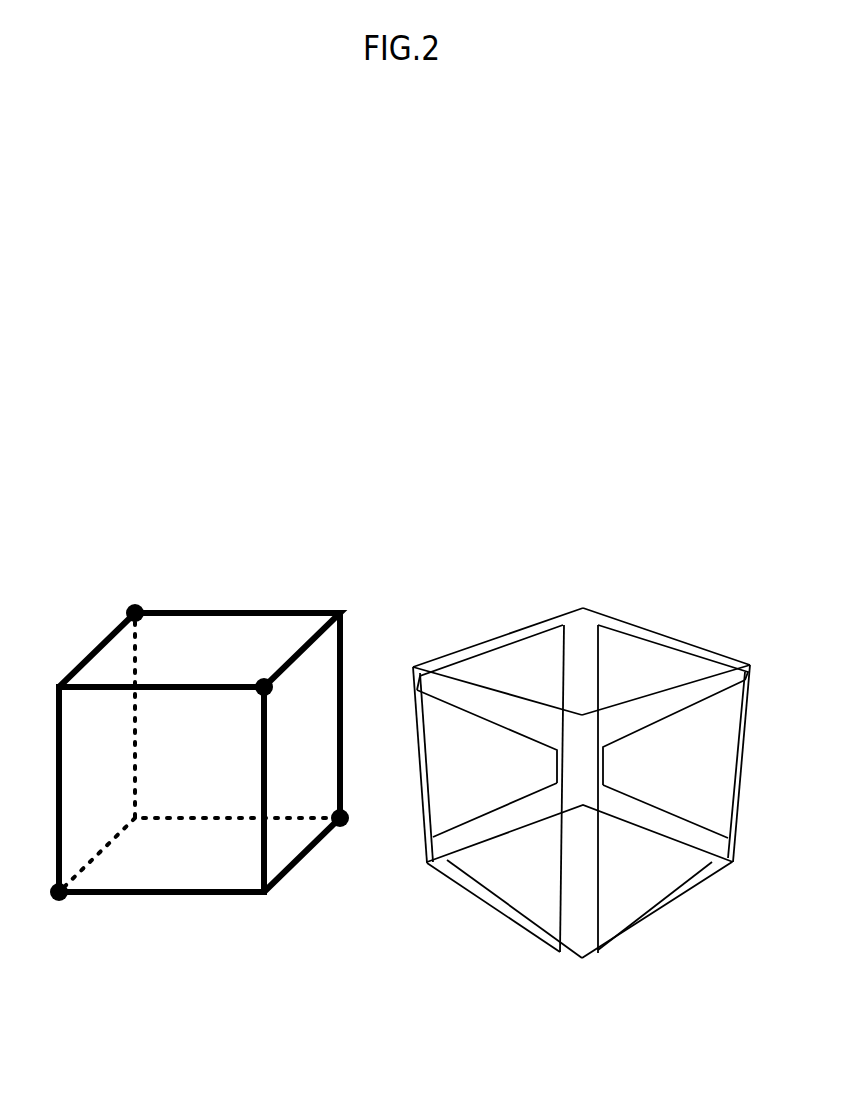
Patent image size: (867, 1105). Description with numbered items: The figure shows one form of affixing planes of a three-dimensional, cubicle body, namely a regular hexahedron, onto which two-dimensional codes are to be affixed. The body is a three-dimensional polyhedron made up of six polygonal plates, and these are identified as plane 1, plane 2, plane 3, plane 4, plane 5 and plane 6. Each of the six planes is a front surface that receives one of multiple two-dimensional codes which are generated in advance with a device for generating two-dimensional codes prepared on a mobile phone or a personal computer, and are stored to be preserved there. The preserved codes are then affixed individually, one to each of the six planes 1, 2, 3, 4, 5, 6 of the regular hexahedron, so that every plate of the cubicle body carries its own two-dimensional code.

The plane 1 is at (247, 648).
The plane 2 is at (450, 743).
The plane 3 is at (442, 685).
The plane 4 is at (733, 673).
The plane 5 is at (80, 810).
The plane 6 is at (205, 870).